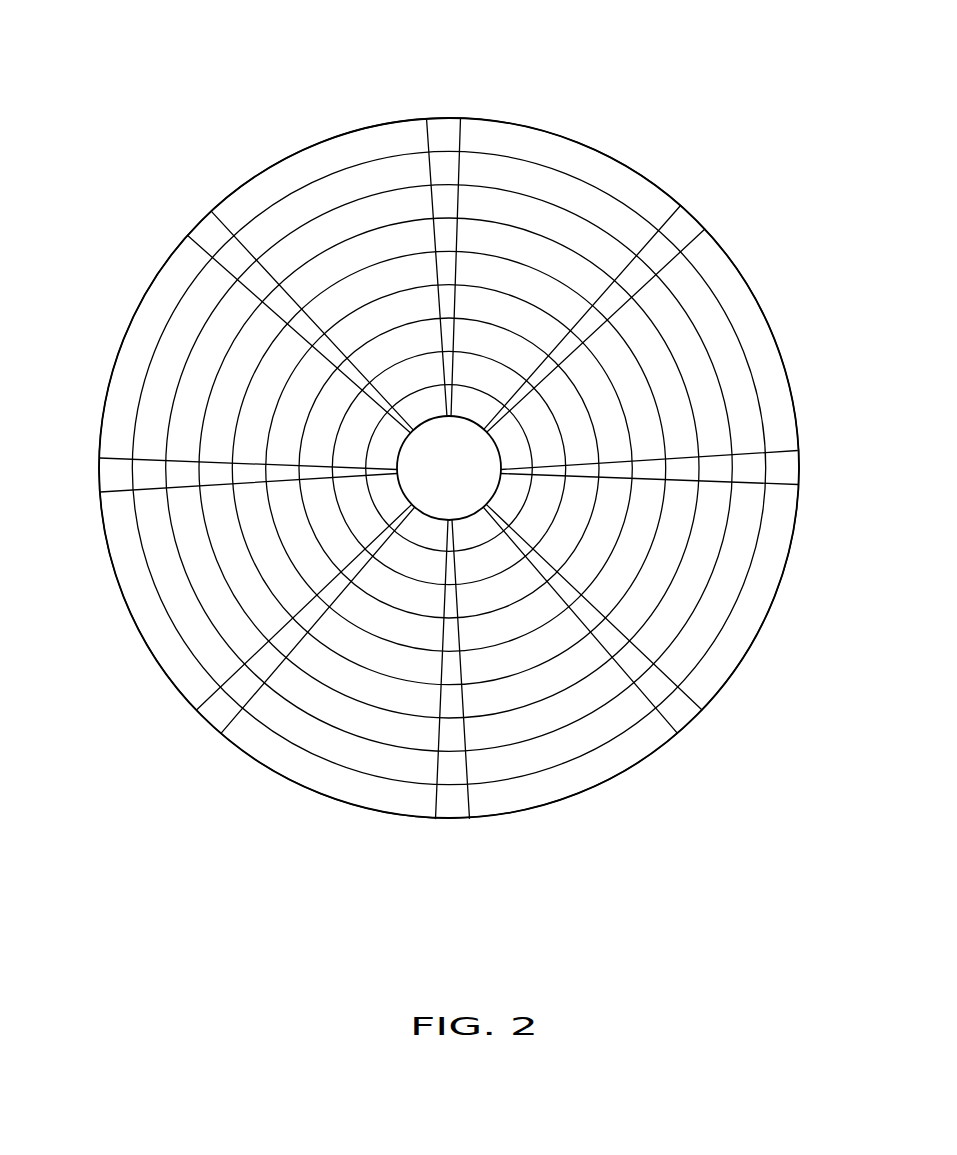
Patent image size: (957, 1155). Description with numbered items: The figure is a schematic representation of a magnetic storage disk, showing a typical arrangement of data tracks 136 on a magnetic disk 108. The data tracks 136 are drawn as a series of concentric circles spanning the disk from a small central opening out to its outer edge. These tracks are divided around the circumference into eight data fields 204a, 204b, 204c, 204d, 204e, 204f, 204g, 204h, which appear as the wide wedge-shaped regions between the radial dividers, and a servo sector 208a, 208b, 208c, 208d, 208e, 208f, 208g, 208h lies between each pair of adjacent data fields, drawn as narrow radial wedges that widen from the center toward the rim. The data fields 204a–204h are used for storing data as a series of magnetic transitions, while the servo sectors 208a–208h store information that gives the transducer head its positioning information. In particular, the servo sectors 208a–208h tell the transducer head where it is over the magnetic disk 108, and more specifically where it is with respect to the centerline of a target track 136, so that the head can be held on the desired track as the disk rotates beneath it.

The magnetic disk 108 is at (400, 117).
The data tracks 136 is at (558, 167).
The data field 204a is at (527, 128).
The data field 204b is at (742, 280).
The data field 204c is at (770, 610).
The data field 204d is at (633, 767).
The data field 204e is at (313, 790).
The data field 204f is at (128, 607).
The data field 204g is at (110, 395).
The data field 204h is at (320, 145).
The servo sector 208a is at (449, 118).
The servo sector 208b is at (695, 225).
The servo sector 208c is at (802, 467).
The servo sector 208d is at (697, 717).
The servo sector 208e is at (455, 820).
The servo sector 208f is at (205, 715).
The servo sector 208g is at (102, 476).
The servo sector 208h is at (200, 225).